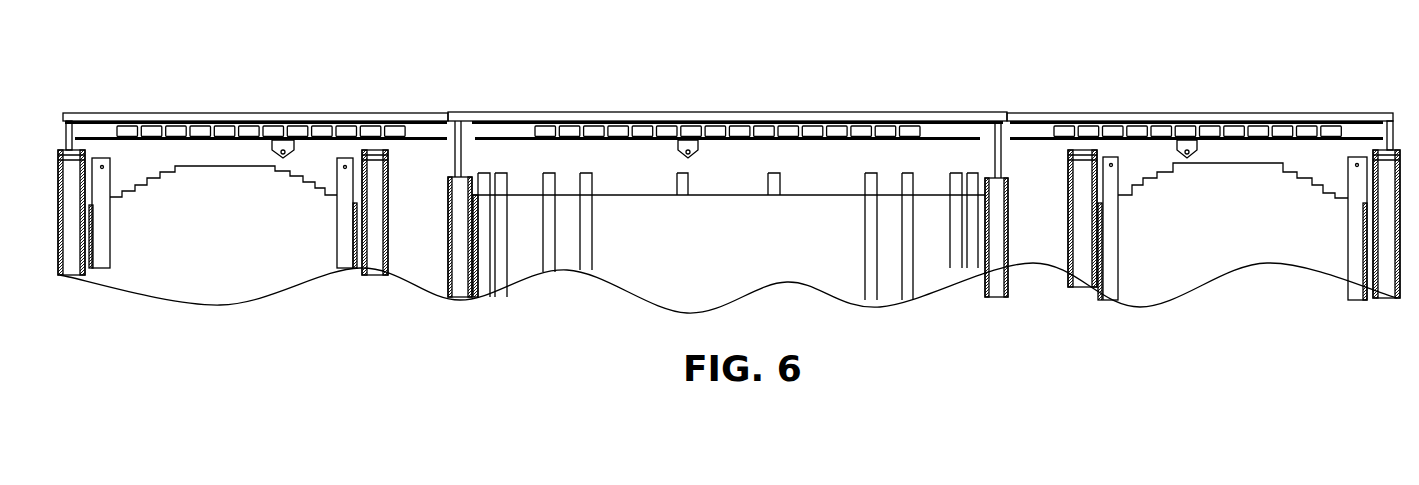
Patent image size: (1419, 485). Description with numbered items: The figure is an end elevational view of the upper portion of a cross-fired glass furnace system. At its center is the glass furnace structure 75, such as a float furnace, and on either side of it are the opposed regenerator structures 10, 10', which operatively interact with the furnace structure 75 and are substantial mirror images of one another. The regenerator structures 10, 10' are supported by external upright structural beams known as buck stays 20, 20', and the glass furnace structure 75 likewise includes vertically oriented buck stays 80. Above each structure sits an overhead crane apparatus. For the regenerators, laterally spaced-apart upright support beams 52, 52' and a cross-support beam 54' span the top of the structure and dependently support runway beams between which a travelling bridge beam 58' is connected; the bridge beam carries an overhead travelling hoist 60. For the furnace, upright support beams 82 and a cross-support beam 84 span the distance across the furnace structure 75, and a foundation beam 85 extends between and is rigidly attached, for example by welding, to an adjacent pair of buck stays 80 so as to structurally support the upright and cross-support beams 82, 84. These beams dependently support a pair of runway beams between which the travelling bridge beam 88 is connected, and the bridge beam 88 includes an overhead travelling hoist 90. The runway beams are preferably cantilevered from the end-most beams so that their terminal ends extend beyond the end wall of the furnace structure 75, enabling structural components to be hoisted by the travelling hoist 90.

The regenerator structure 10 is at (1196, 227).
The regenerator structure 10' is at (256, 241).
The buck stays 20 is at (1234, 280).
The buck stays 20' is at (228, 266).
The upright support beams 52 is at (1397, 83).
The upright support beams 52' is at (92, 104).
The cross-support beam 54' is at (255, 89).
The travelling bridge beam 58' is at (261, 91).
The overhead travelling hoist 60 is at (280, 157).
The glass furnace structure 75 is at (639, 270).
The buck stays 80 is at (462, 292).
The upright support beams 82 is at (460, 157).
The cross-support beam 84 is at (640, 110).
The foundation beam 85 is at (1263, 132).
The travelling bridge beam 88 is at (834, 124).
The overhead travelling hoist 90 is at (691, 155).